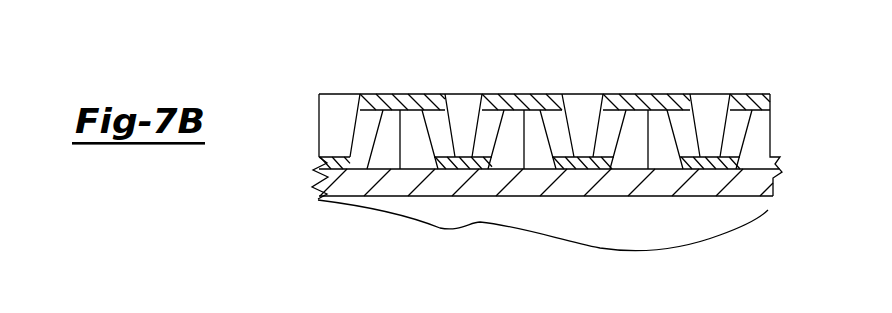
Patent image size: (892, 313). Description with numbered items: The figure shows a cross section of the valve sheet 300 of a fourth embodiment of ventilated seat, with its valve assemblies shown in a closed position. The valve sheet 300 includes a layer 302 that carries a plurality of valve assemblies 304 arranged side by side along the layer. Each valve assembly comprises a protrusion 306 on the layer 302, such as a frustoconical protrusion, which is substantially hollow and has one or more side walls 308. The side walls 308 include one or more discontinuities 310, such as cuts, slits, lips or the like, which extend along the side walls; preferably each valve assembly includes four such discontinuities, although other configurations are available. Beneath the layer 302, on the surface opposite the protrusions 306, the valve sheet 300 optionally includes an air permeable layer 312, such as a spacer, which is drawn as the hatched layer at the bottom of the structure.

The valve sheet 300 is at (284, 126).
The layer 302 is at (767, 120).
The valve assemblies 304 is at (481, 89).
The protrusion 306 is at (643, 97).
The side walls 308 is at (413, 145).
The discontinuities 310 is at (520, 140).
The air permeable layer 312 is at (318, 192).